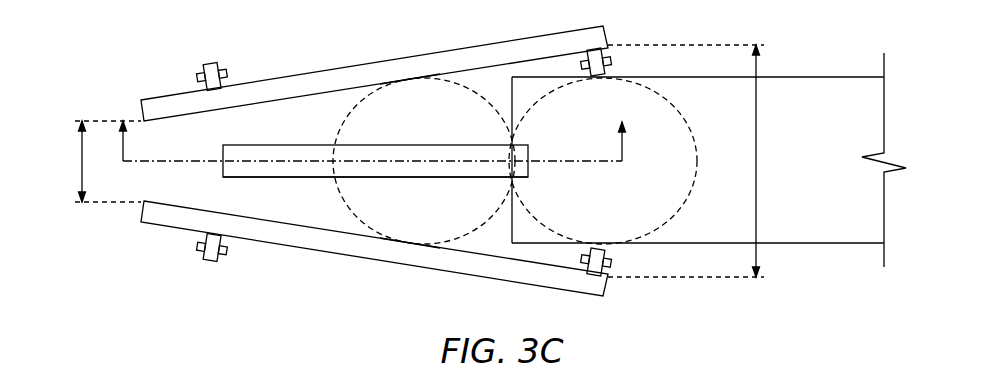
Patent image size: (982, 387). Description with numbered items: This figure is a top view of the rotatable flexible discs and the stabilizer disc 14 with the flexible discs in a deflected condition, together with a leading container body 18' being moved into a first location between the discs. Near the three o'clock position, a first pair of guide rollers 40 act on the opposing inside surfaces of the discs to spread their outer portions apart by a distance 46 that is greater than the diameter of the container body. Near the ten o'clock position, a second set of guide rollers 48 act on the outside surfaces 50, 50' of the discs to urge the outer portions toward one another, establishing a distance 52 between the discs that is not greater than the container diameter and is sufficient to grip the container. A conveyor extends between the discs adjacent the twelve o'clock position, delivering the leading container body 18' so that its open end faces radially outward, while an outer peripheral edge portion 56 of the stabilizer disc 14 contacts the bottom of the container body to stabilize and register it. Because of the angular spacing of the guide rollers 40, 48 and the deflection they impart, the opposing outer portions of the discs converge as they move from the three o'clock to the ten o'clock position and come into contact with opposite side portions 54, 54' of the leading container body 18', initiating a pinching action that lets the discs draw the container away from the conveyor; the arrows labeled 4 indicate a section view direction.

The section view arrows 4 is at (373, 127).
The stabilizer disc 14 is at (268, 145).
The leading container body 18' is at (501, 136).
The first pair of guide rollers 40 is at (612, 52).
The distance 46 is at (756, 162).
The second set of guide rollers 48 is at (212, 63).
The outside surface 50 is at (374, 255).
The outside surface 50' is at (374, 70).
The distance 52 is at (82, 162).
The side portion 54 is at (407, 274).
The side portion 54' is at (405, 51).
The outer peripheral edge portion 56 is at (271, 178).